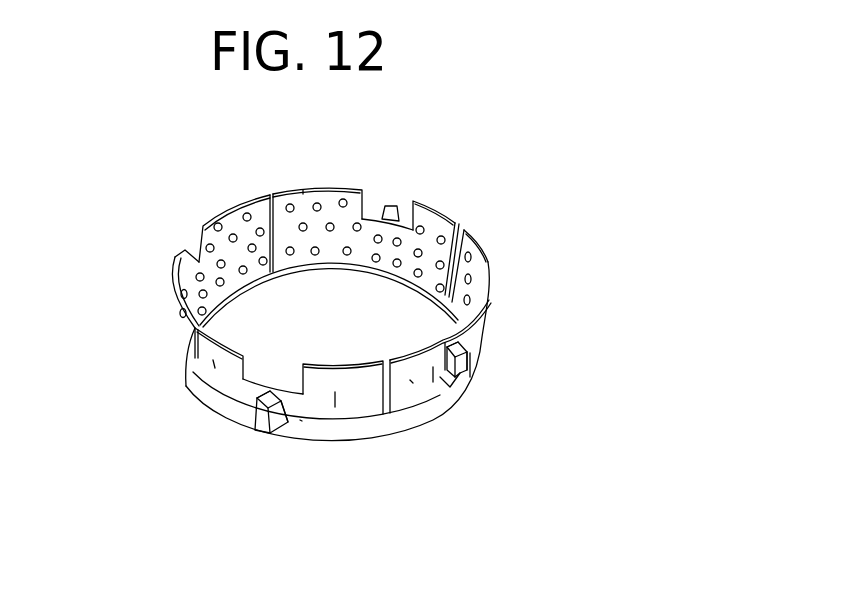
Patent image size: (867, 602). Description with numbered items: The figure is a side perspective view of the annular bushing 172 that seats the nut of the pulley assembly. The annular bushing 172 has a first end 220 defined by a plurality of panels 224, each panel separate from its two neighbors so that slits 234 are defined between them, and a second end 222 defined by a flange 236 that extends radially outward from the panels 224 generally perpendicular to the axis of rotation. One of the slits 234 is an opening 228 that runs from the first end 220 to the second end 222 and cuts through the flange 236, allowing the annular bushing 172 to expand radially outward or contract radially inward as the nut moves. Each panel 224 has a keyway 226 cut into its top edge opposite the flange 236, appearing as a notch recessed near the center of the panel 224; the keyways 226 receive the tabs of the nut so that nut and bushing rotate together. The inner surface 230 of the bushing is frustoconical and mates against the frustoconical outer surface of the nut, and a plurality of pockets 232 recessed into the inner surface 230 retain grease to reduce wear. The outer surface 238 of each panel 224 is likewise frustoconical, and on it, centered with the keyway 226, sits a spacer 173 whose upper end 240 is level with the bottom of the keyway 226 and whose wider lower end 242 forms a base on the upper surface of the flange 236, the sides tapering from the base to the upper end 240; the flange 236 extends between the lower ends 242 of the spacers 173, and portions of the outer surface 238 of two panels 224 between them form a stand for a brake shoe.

The annular bushing 172 is at (611, 283).
The spacer 173 is at (392, 205).
The first end 220 is at (171, 292).
The second end 222 is at (180, 346).
The panels 224 is at (232, 206).
The keyway 226 is at (364, 210).
The opening 228 is at (383, 364).
The inner surface 230 is at (286, 205).
The pockets 232 is at (247, 272).
The slits 234 is at (303, 190).
The flange 236 is at (343, 430).
The outer surface 238 is at (410, 380).
The upper end 240 is at (483, 330).
The lower end 242 is at (472, 370).